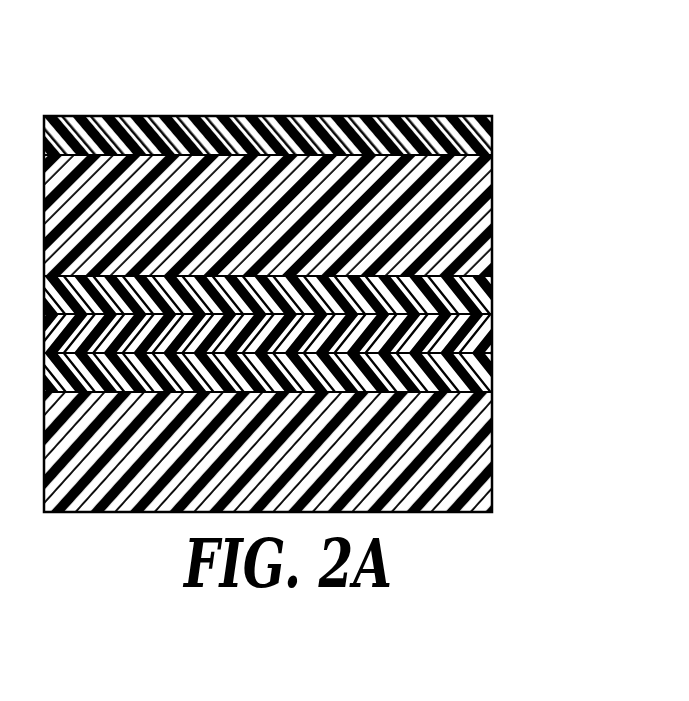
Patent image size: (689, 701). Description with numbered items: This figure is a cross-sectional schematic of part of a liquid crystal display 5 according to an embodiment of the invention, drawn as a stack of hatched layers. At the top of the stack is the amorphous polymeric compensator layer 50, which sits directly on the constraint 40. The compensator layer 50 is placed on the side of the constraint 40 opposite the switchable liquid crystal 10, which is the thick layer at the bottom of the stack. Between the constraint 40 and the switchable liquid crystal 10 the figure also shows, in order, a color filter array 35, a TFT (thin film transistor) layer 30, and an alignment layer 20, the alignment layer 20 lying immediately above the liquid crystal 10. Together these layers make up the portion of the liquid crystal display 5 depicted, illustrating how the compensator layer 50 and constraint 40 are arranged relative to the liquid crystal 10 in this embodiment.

The liquid crystal display 5 is at (315, 263).
The switchable liquid crystal 10 is at (492, 443).
The alignment layer 20 is at (492, 368).
The TFT layer 30 is at (492, 330).
The color filter array 35 is at (463, 303).
The constraint 40 is at (492, 205).
The amorphous polymeric compensator layer 50 is at (492, 124).